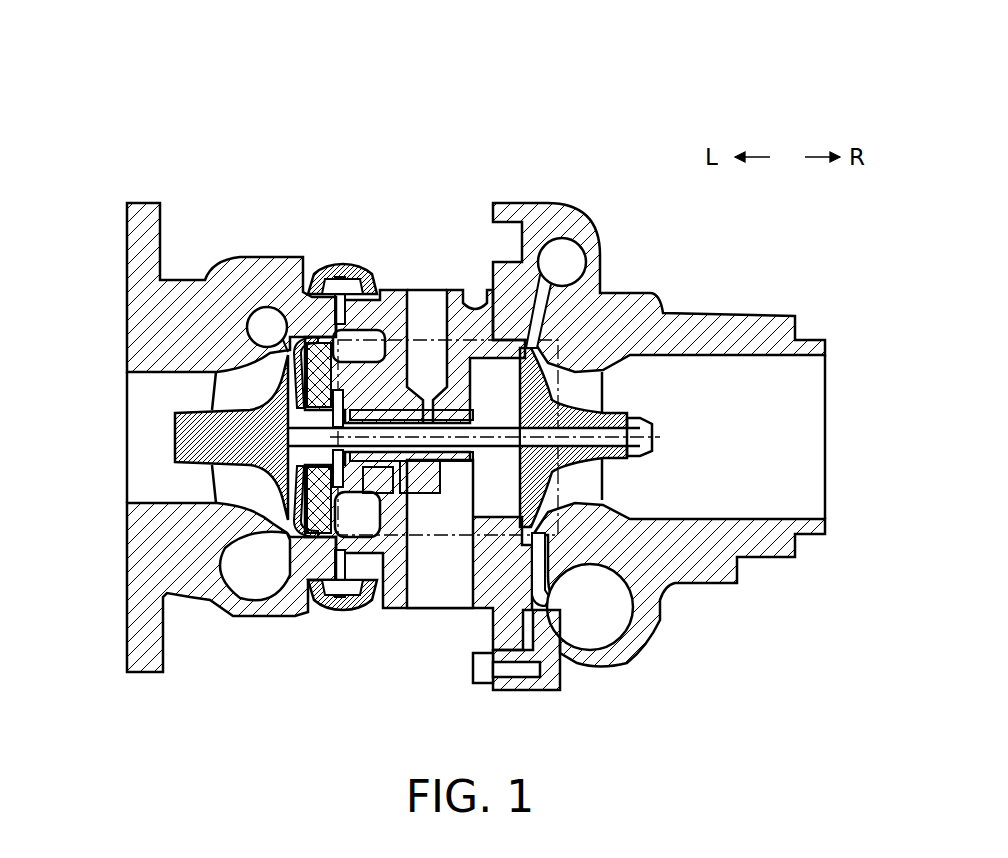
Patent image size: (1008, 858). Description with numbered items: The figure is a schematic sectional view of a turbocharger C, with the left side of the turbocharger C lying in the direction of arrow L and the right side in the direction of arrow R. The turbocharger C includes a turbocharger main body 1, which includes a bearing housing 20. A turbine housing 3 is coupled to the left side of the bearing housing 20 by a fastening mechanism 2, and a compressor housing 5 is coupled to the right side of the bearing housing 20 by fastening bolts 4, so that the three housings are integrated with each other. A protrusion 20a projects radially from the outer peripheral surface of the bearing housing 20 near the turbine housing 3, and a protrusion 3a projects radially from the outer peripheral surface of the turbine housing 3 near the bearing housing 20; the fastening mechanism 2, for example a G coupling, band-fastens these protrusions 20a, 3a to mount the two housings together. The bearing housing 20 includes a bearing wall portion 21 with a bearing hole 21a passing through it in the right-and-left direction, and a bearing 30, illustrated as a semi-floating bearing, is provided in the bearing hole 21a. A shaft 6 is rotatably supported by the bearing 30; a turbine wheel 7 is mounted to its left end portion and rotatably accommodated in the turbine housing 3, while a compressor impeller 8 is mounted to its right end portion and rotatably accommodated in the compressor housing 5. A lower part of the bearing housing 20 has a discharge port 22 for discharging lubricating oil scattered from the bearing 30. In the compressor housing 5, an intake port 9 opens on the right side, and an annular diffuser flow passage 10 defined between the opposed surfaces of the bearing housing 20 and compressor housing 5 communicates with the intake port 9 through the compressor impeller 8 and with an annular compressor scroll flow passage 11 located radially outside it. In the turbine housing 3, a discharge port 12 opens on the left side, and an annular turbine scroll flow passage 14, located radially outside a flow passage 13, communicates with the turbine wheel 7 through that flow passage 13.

The turbocharger main body 1 is at (226, 158).
The turbocharger C is at (172, 118).
The fastening mechanism 2 is at (347, 262).
The turbine housing 3 is at (253, 257).
The protrusion 3a is at (330, 612).
The fastening bolts 4 is at (462, 672).
The compressor housing 5 is at (675, 313).
The shaft 6 is at (392, 428).
The turbine wheel 7 is at (217, 490).
The compressor impeller 8 is at (603, 478).
The intake port 9 is at (803, 520).
The diffuser flow passage 10 is at (562, 575).
The compressor scroll flow passage 11 is at (563, 253).
The discharge port 12 is at (157, 372).
The flow passage 13 is at (280, 350).
The turbine scroll flow passage 14 is at (247, 598).
The bearing housing 20 is at (460, 287).
The protrusion 20a is at (352, 614).
The bearing wall portion 21 is at (300, 520).
The bearing hole 21a is at (395, 610).
The discharge port 22 is at (437, 610).
The bearing 30 is at (443, 383).